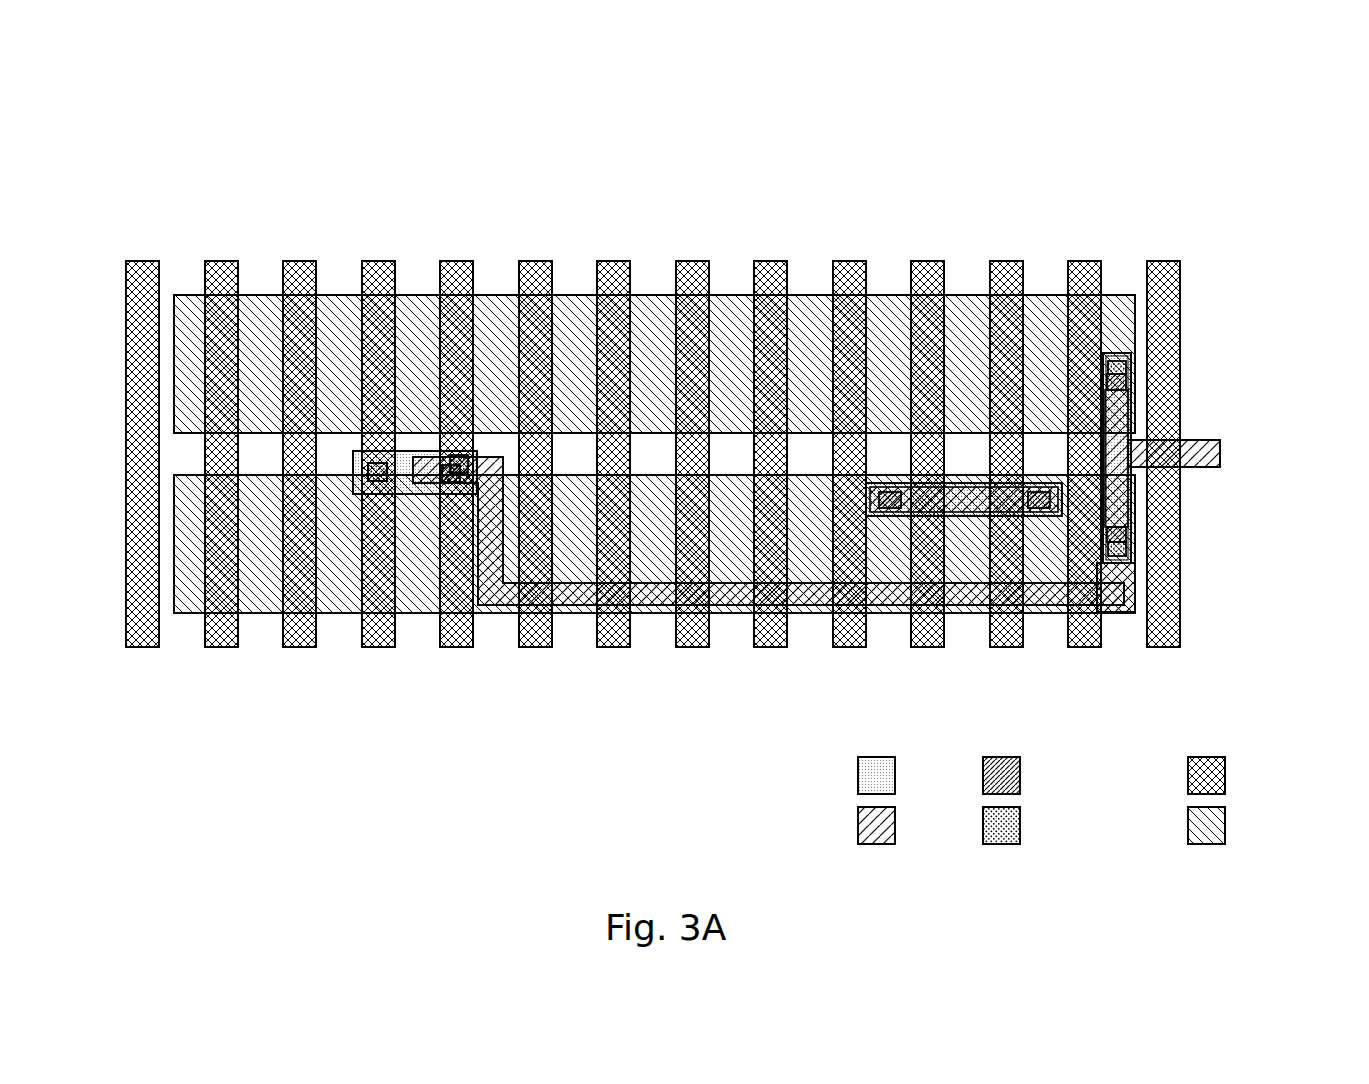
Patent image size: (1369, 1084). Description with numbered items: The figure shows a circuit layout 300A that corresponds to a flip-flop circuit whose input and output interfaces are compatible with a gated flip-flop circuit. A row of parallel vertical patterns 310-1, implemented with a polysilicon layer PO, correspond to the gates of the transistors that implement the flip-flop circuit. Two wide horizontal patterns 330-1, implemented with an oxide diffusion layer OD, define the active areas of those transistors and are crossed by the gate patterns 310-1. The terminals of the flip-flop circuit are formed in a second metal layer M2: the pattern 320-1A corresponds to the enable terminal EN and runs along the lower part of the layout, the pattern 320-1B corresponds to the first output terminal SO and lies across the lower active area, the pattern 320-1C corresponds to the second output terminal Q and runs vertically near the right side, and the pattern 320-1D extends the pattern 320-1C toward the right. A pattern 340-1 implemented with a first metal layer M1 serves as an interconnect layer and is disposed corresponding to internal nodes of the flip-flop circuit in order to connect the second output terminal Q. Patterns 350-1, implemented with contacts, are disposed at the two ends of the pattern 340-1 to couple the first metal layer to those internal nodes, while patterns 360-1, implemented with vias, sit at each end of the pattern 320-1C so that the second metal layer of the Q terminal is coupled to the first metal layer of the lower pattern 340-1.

The circuit layout 300A is at (110, 79).
The patterns 310-1 is at (142, 648).
The pattern 320-1A is at (496, 455).
The pattern 320-1B is at (958, 483).
The pattern 320-1C is at (1122, 352).
The pattern 320-1D is at (1212, 440).
The patterns 330-1 is at (724, 316).
The pattern 340-1 is at (1133, 498).
The patterns 350-1 is at (1128, 364).
The patterns 360-1 is at (1128, 381).